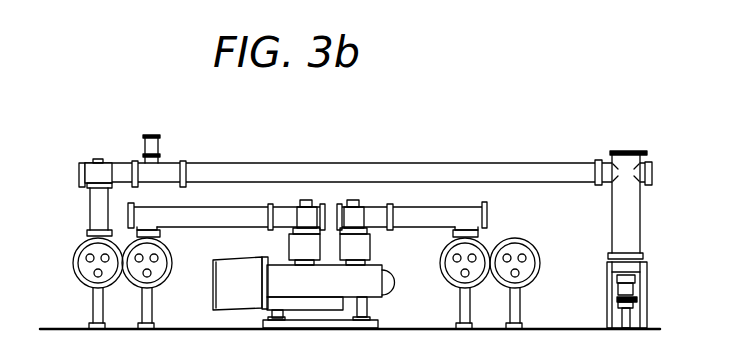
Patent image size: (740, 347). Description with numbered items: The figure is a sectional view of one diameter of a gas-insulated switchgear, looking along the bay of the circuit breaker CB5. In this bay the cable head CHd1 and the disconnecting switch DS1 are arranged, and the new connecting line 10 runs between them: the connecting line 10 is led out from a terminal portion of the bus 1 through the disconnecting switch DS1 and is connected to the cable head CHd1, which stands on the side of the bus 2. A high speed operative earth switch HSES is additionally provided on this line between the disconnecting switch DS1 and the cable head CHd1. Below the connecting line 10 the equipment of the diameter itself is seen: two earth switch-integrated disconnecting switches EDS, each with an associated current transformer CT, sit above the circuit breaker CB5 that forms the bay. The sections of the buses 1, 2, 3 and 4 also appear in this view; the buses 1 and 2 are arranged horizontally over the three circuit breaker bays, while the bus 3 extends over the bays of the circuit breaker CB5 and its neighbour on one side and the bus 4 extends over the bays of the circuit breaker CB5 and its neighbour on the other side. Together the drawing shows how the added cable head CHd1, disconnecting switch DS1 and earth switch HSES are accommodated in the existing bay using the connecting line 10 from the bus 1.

The bus 1 is at (78, 284).
The bus 2 is at (535, 284).
The bus 3 is at (167, 284).
The bus 4 is at (445, 284).
The connecting line 10 is at (455, 163).
The disconnecting switch DS1 is at (105, 181).
The earth switch (high speed operation type) HSES is at (162, 134).
The earth switch-integrated disconnecting switch EDS is at (307, 209).
The current transformer CT is at (331, 249).
The circuit breaker CB5 is at (304, 292).
The cable head CHd1 is at (603, 239).